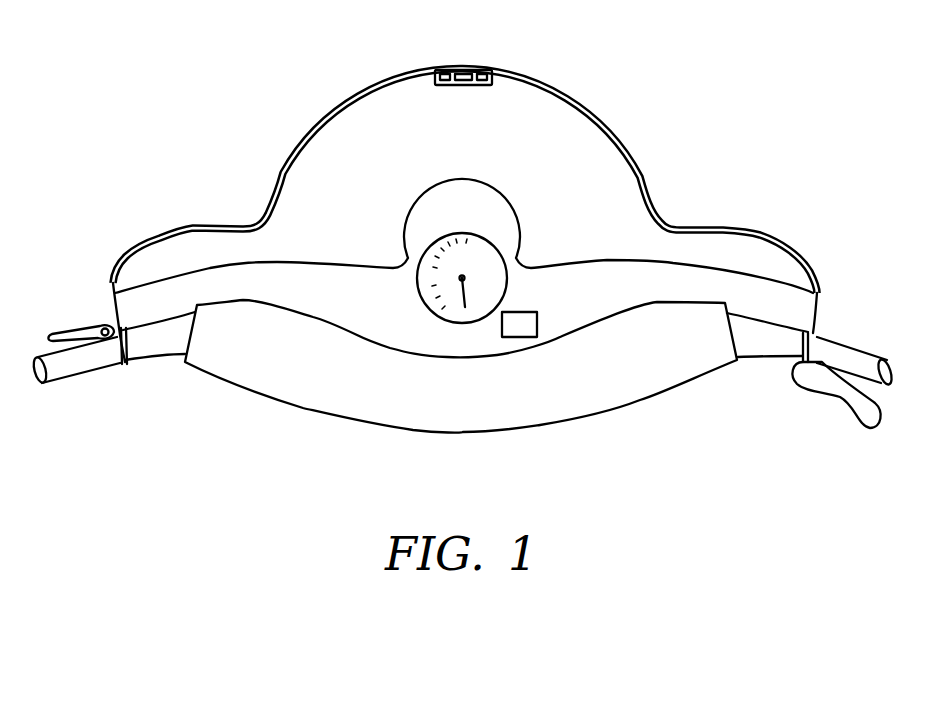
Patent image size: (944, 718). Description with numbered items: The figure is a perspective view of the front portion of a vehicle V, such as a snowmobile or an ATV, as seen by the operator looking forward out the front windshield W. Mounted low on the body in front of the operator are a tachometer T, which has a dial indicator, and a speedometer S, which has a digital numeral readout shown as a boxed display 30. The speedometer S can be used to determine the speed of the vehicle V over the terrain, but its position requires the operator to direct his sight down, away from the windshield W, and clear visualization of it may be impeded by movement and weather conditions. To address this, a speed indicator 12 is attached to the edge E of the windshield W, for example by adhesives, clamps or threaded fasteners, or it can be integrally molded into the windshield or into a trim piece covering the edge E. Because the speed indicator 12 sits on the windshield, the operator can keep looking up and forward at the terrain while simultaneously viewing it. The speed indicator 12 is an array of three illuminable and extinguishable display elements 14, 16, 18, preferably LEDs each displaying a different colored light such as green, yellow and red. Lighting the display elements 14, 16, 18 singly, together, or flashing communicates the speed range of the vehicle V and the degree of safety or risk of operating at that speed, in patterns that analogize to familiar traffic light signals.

The speed indicator 12 is at (428, 64).
The display element 14 is at (445, 72).
The display element 16 is at (468, 72).
The display element 18 is at (485, 72).
The display unit 30 is at (519, 324).
The vehicle V is at (163, 195).
The edge of the windshield E is at (586, 108).
The windshield W is at (598, 160).
The tachometer T is at (441, 313).
The speedometer S is at (537, 326).